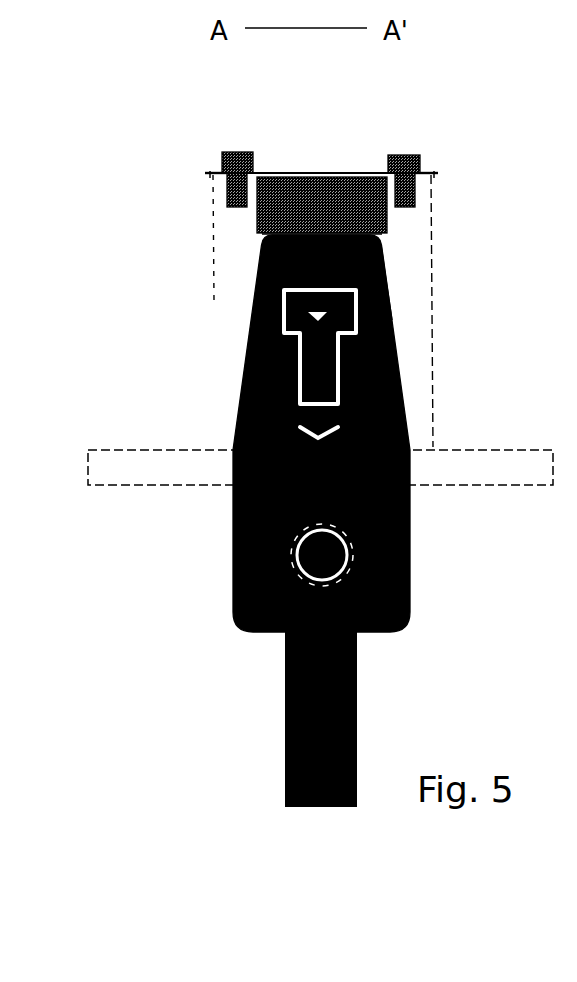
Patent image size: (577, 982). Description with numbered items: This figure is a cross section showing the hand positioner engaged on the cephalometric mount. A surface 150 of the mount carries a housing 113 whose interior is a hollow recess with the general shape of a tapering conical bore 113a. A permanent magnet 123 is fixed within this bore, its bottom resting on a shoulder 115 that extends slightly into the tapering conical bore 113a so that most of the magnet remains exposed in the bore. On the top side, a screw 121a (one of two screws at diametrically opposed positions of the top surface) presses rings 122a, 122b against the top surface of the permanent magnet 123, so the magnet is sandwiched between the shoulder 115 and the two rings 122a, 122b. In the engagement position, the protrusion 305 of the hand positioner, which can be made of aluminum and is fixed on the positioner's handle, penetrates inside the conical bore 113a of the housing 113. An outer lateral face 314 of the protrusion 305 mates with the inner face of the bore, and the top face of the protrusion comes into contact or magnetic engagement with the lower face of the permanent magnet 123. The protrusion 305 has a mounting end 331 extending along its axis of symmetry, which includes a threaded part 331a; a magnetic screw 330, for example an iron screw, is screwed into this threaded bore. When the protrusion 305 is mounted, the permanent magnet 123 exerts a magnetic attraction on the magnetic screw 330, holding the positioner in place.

The housing 113 is at (227, 257).
The tapering conical bore 113a is at (387, 267).
The shoulder 115 is at (385, 238).
The screw 121a is at (237, 157).
The ring 122a is at (210, 170).
The ring 122b is at (433, 170).
The permanent magnet 123 is at (318, 180).
The surface 150 is at (152, 473).
The protrusion 305 is at (273, 492).
The outer lateral face 314 is at (388, 285).
The magnetic screw 330 is at (328, 343).
The mounting end 331 is at (328, 265).
The threaded part 331a is at (340, 375).